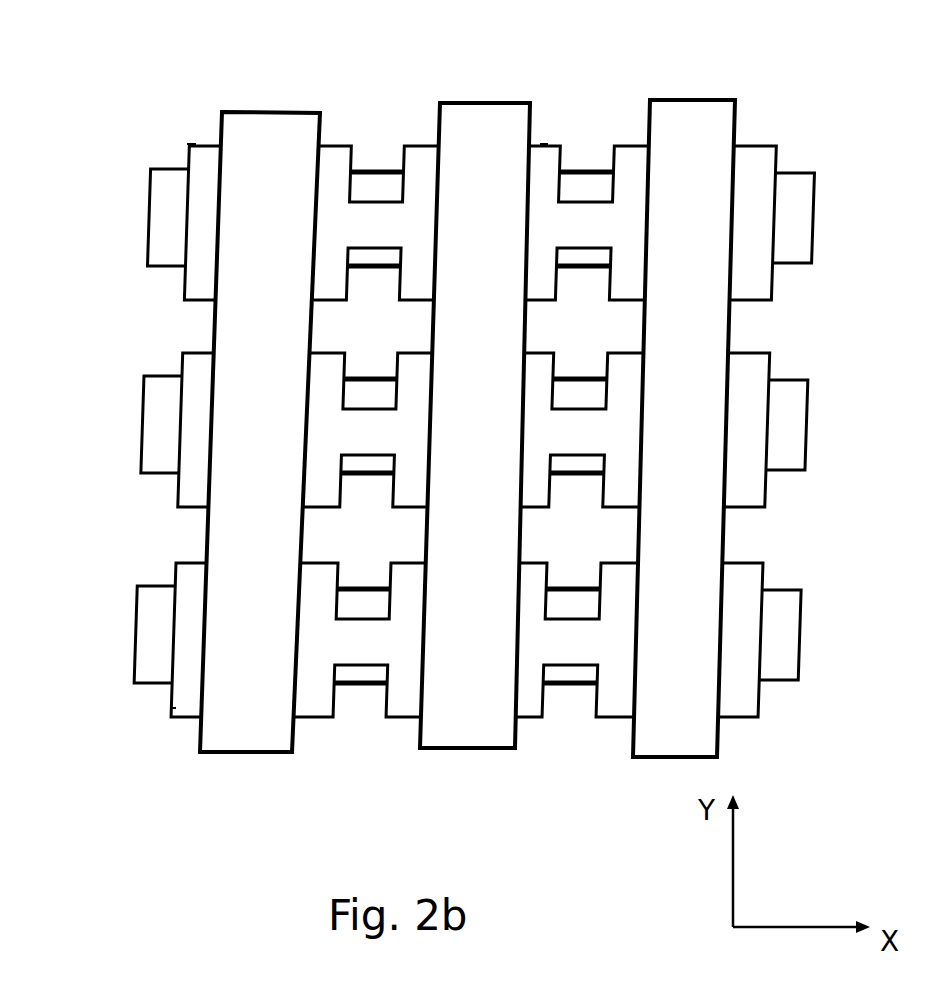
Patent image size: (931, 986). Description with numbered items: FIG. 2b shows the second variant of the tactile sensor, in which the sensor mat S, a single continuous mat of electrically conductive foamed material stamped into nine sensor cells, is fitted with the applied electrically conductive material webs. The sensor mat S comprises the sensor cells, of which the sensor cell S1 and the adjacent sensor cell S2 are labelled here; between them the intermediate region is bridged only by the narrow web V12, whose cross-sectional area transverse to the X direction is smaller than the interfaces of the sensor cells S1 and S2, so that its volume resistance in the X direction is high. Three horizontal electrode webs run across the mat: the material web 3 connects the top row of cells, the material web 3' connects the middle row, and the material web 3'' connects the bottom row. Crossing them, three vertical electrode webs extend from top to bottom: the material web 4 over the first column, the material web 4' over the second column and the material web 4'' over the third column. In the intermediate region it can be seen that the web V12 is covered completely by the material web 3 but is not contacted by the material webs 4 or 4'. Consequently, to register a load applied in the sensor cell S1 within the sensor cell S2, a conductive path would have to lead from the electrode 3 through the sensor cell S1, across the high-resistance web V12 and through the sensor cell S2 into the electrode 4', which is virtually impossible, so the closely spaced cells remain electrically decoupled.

The electrically conductive material web 3 is at (436, 180).
The electrically conductive material web 3' is at (425, 430).
The electrically conductive material web 3'' is at (416, 640).
The electrically conductive material web 4 is at (260, 383).
The electrically conductive material web 4' is at (475, 383).
The electrically conductive material web 4'' is at (684, 387).
The sensor cell S1 is at (197, 140).
The sensor cell S2 is at (548, 135).
The sensor mat S is at (168, 707).
The web V12 is at (366, 217).